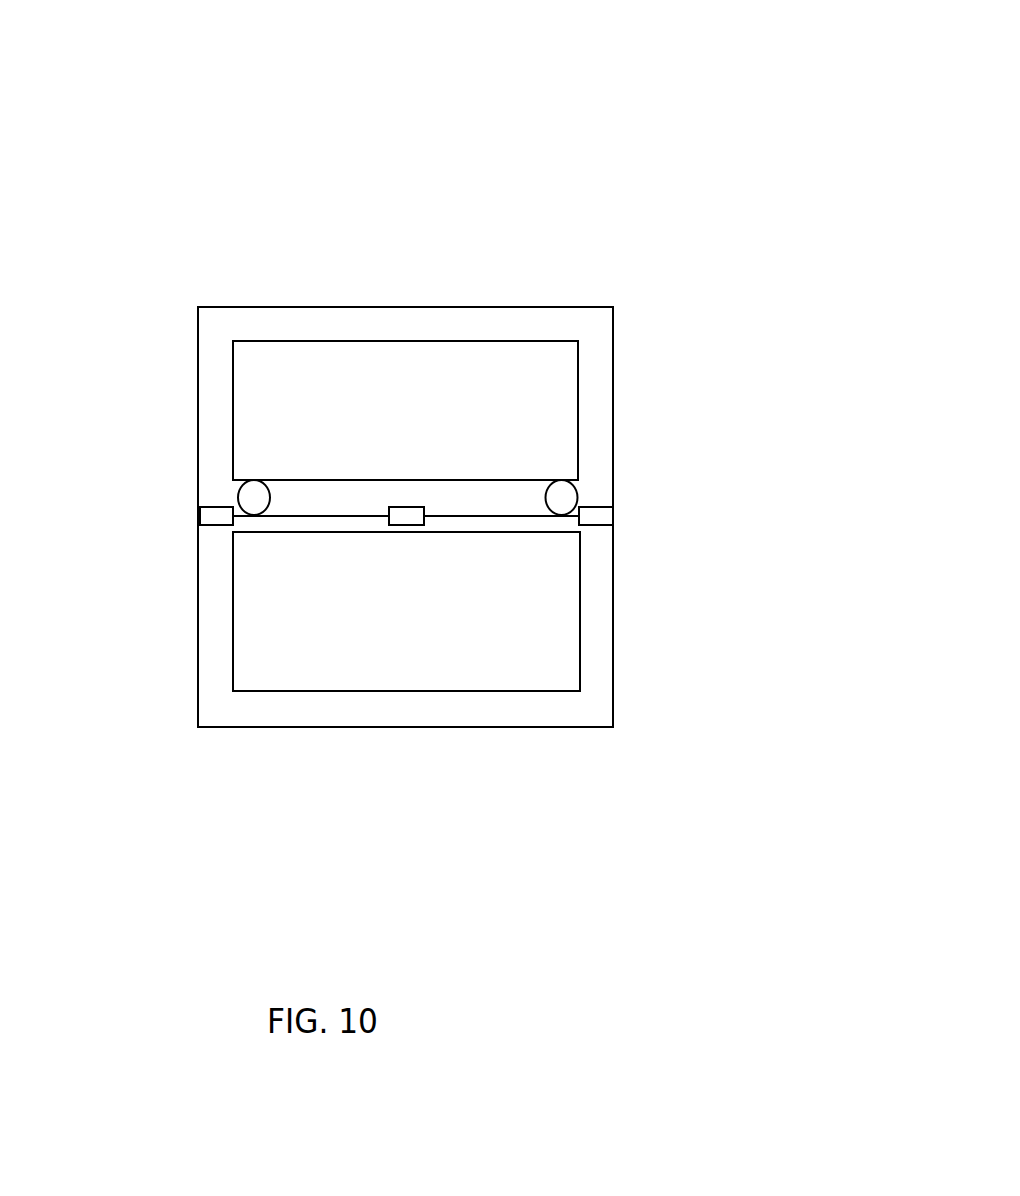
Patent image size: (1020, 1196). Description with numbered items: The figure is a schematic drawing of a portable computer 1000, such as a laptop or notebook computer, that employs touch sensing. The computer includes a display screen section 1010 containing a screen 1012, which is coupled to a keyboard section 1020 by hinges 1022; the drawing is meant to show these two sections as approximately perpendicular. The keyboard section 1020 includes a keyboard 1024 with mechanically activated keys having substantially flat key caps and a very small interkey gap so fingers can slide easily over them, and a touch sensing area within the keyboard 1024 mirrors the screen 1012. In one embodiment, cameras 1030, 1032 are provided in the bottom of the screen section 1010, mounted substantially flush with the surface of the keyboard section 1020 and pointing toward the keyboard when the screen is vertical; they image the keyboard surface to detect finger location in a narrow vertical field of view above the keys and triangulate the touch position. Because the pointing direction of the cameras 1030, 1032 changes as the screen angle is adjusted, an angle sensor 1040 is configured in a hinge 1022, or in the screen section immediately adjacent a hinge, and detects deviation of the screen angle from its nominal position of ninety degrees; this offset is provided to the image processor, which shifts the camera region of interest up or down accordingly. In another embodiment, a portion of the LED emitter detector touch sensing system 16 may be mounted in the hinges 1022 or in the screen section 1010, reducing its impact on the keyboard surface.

The image forming apparatus 1000 is at (470, 449).
The display screen section 1010 is at (577, 302).
The screen 1012 is at (578, 377).
The keyboard section 1020 is at (618, 727).
The hinges 1022 is at (615, 513).
The keyboard 1024 is at (578, 627).
The camera 1030 is at (577, 489).
The camera 1032 is at (236, 486).
The angle sensor 1040 is at (234, 523).
The LED emitter detector touch sensing system 16 is at (408, 528).